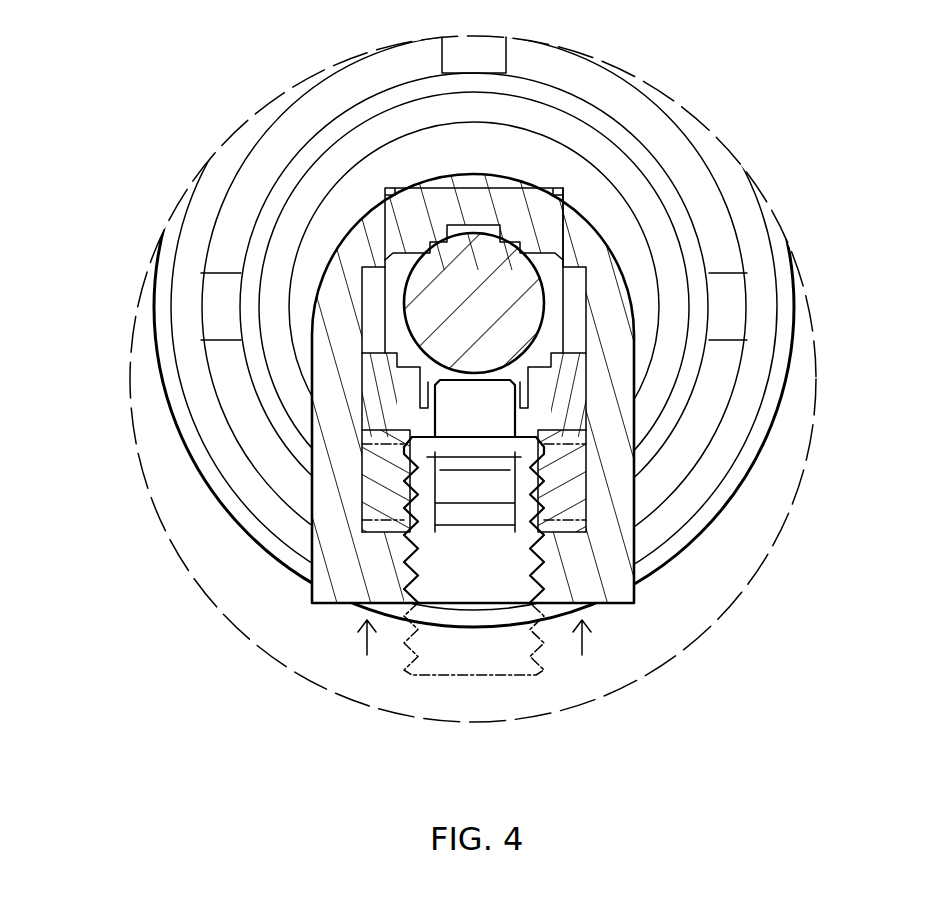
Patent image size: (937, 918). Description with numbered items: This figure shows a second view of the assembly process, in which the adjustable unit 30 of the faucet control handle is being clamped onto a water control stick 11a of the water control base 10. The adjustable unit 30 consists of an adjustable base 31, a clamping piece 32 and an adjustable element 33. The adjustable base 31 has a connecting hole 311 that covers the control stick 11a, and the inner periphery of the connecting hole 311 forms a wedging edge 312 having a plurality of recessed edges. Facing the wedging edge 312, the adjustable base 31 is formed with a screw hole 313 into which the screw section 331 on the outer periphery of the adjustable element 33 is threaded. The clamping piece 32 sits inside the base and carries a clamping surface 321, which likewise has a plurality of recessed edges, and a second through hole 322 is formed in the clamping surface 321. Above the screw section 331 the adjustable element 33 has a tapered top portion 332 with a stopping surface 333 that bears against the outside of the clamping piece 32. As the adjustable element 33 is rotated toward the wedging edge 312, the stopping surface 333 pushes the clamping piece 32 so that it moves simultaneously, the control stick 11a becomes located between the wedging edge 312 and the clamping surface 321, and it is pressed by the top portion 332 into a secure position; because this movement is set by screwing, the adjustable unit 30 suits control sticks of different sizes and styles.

The water control base 10 is at (335, 175).
The water control stick 11a is at (615, 262).
The adjustable unit 30 is at (330, 504).
The adjustable base 31 is at (500, 197).
The connecting hole 311 is at (378, 302).
The wedging edge 312 is at (480, 305).
The clamping piece 32 is at (373, 402).
The clamping surface 321 is at (374, 402).
The second through hole 322 is at (435, 423).
The adjustable element 33 is at (487, 512).
The screw section 331 is at (474, 639).
The top portion 332 is at (485, 403).
The stopping surface 333 is at (545, 432).
The screw hole 313 is at (545, 557).